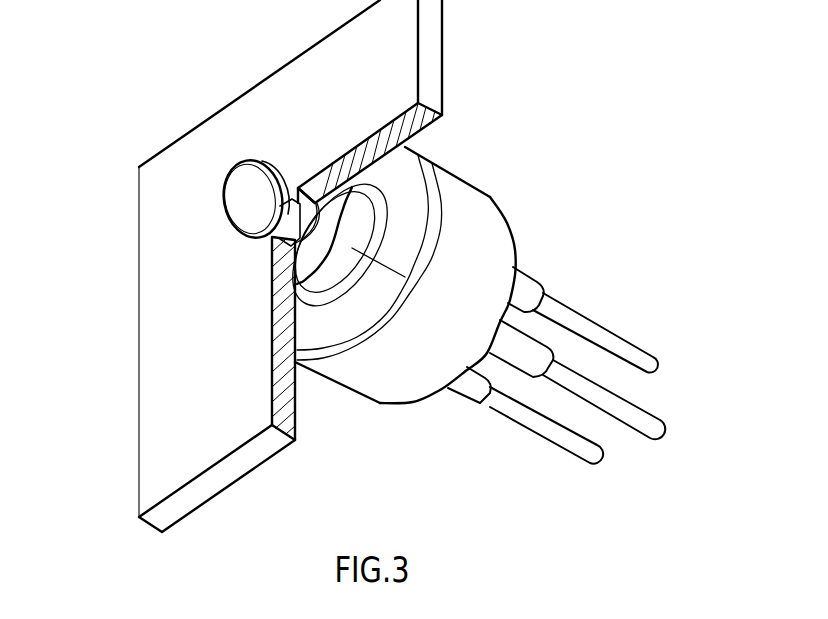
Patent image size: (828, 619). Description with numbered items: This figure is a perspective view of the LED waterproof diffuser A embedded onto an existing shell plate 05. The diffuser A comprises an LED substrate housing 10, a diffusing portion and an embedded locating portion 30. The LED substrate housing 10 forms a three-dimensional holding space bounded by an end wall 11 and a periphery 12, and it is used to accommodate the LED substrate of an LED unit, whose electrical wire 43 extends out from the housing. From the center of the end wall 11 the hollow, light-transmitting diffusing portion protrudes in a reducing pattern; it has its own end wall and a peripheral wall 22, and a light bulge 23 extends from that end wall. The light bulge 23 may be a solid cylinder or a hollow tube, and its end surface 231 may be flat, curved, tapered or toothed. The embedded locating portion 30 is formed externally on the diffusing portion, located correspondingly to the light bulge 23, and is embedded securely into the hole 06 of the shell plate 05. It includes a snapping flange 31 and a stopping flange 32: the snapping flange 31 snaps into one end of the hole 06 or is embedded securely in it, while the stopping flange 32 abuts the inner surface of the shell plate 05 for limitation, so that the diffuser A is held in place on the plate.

The shell plate 05 is at (155, 455).
The hole 06 is at (299, 190).
The LED substrate housing 10 is at (480, 115).
The end wall 11 is at (472, 193).
The periphery 12 is at (407, 200).
The peripheral wall 22 is at (405, 276).
The light bulge 23 is at (270, 199).
The end surface 231 is at (243, 185).
The embedded locating portion 30 is at (75, 237).
The snapping flange 31 is at (290, 238).
The stopping flange 32 is at (307, 260).
The electrical wire 43 is at (617, 330).
The LED waterproof diffuser A is at (612, 145).